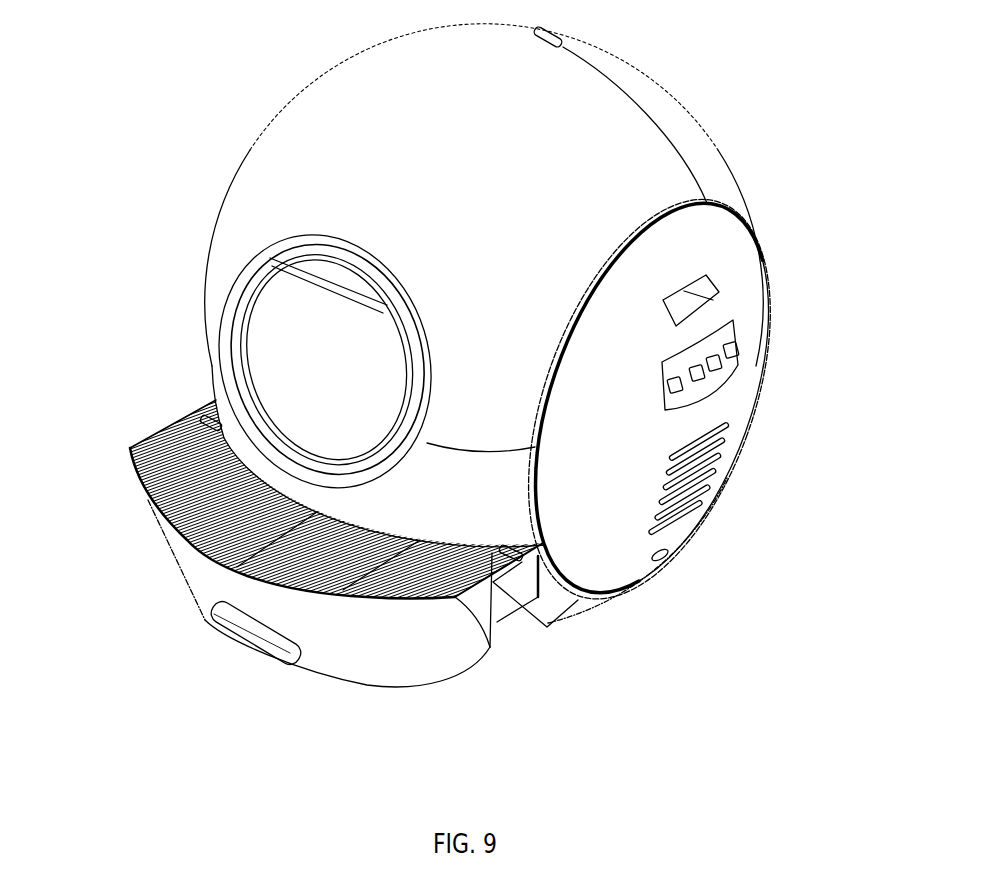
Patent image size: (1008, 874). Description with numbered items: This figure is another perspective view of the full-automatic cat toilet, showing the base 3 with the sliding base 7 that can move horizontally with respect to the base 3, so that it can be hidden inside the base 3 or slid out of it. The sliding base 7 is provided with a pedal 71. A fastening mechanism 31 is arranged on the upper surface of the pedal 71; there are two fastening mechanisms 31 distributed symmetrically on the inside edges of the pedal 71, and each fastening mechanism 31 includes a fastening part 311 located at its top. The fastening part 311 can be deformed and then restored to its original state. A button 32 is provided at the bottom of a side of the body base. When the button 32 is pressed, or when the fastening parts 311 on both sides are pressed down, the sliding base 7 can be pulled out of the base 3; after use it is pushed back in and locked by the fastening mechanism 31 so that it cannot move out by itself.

The base 3 is at (513, 485).
The fastening mechanism 31 is at (207, 402).
The fastening part 311 is at (540, 577).
The button 32 is at (550, 627).
The sliding base 7 is at (370, 670).
The pedal 71 is at (177, 535).